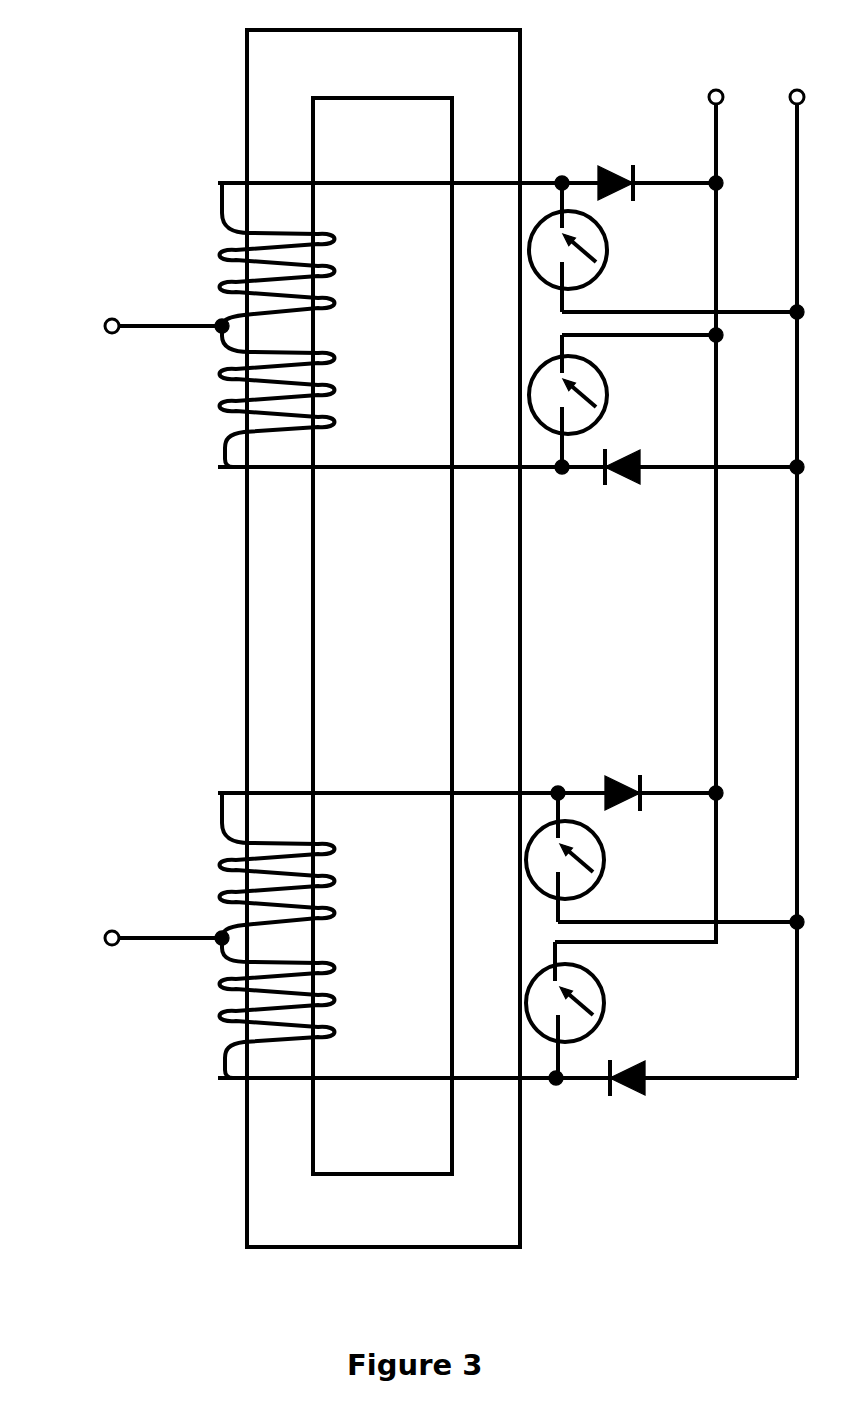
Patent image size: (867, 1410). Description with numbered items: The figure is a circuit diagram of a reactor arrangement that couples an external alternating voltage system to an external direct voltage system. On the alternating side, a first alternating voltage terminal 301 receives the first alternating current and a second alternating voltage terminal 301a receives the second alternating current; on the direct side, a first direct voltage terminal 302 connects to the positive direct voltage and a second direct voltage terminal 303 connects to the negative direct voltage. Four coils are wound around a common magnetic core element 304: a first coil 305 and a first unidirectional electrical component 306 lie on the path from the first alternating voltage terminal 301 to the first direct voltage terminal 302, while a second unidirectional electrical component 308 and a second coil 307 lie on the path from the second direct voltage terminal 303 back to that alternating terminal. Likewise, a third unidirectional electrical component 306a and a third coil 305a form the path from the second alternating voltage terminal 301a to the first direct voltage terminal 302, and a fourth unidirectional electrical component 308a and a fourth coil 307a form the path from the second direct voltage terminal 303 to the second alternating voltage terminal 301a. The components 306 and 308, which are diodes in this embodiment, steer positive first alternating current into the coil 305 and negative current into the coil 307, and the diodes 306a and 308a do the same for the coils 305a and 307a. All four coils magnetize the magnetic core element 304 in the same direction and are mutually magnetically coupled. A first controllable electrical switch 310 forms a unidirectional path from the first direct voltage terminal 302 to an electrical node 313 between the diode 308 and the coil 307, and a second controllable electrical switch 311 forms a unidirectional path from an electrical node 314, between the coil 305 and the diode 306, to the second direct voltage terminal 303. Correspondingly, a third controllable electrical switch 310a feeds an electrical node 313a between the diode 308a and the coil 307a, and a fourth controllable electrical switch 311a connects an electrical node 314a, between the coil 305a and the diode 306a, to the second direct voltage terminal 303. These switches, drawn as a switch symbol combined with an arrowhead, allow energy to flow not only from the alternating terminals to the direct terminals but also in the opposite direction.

The first alternating voltage terminal 301 is at (112, 318).
The second alternating voltage terminal 301a is at (112, 930).
The first direct voltage terminal 302 is at (716, 90).
The second direct voltage terminal 303 is at (797, 90).
The magnetic core element 304 is at (245, 592).
The first coil 305 is at (333, 227).
The third coil 305a is at (333, 838).
The first unidirectional electrical component 306 is at (620, 165).
The third unidirectional electrical component 306a is at (625, 780).
The second coil 307 is at (333, 345).
The fourth coil 307a is at (333, 955).
The second unidirectional electrical component 308 is at (624, 487).
The fourth unidirectional electrical component 308a is at (630, 1095).
The first controllable electrical switch 310 is at (607, 392).
The third controllable electrical switch 310a is at (603, 1009).
The second controllable electrical switch 311 is at (607, 256).
The fourth controllable electrical switch 311a is at (603, 866).
The electrical node 313 is at (394, 470).
The electrical node 313a is at (392, 1080).
The electrical node 314 is at (368, 182).
The electrical node 314a is at (400, 791).